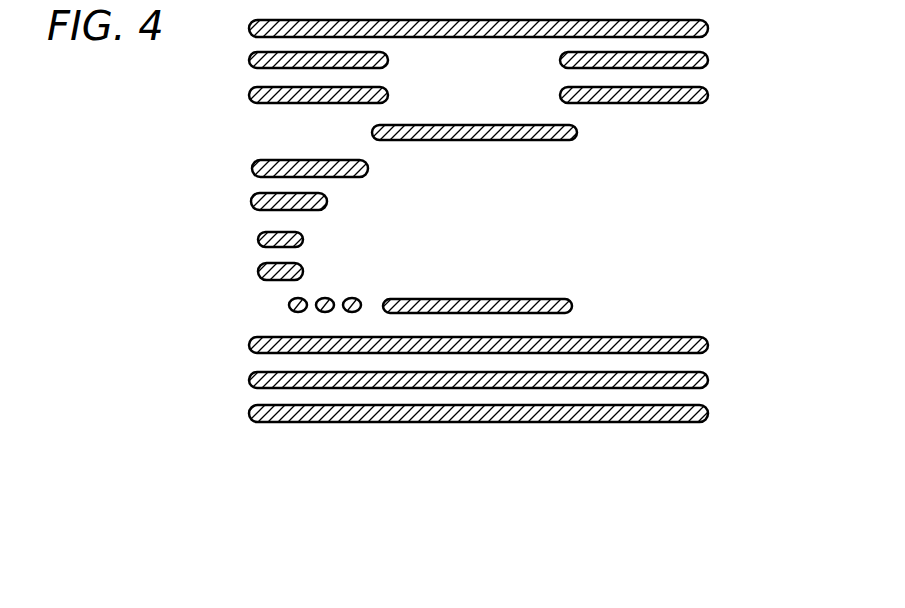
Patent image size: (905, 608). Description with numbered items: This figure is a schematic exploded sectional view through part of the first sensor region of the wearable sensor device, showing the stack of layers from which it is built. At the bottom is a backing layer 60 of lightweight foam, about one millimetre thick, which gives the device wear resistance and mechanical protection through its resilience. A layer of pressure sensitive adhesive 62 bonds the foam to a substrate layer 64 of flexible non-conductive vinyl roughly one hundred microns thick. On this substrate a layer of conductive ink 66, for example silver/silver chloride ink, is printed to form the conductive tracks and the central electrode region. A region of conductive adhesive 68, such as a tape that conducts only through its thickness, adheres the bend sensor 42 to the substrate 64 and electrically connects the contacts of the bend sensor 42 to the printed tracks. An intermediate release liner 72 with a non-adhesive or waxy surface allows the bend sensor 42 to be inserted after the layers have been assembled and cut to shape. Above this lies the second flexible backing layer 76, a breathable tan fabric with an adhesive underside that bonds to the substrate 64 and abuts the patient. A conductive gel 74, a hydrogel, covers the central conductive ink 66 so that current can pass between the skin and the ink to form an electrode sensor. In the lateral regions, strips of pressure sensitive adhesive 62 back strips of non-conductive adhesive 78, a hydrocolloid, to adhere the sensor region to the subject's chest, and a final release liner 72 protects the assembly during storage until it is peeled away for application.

The bend sensor 42 is at (258, 240).
The backing layer 60 is at (708, 413).
The pressure sensitive adhesive 62 is at (708, 95).
The substrate layer 64 is at (708, 345).
The conductive ink 66 is at (572, 306).
The conductive adhesive 68 is at (258, 270).
The release liner 72 is at (708, 28).
The conductive gel 74 is at (577, 132).
The second flexible backing layer 76 is at (252, 170).
The non-conductive adhesive 78 is at (708, 60).